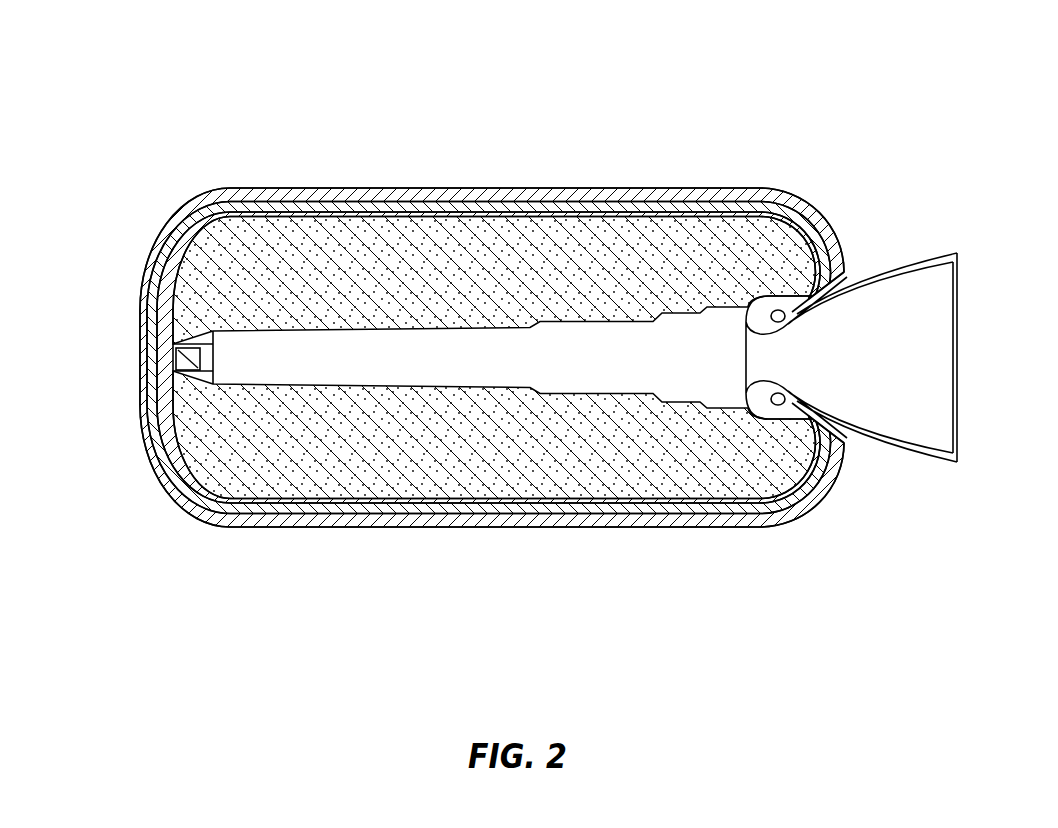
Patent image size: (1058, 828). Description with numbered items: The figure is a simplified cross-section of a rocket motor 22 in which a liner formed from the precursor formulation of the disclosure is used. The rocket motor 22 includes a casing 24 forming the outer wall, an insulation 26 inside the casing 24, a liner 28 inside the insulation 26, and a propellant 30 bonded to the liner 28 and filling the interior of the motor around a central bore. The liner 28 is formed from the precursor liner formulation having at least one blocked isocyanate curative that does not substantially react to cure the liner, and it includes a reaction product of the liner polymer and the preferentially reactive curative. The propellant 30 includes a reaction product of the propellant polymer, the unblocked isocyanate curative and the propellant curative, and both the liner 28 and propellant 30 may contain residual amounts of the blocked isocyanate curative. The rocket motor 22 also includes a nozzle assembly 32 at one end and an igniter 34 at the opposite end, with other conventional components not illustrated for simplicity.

The rocket motor 22 is at (596, 146).
The casing 24 is at (232, 189).
The insulation 26 is at (342, 209).
The liner 28 is at (410, 214).
The propellant 30 is at (548, 478).
The nozzle assembly 32 is at (900, 263).
The igniter 34 is at (178, 350).